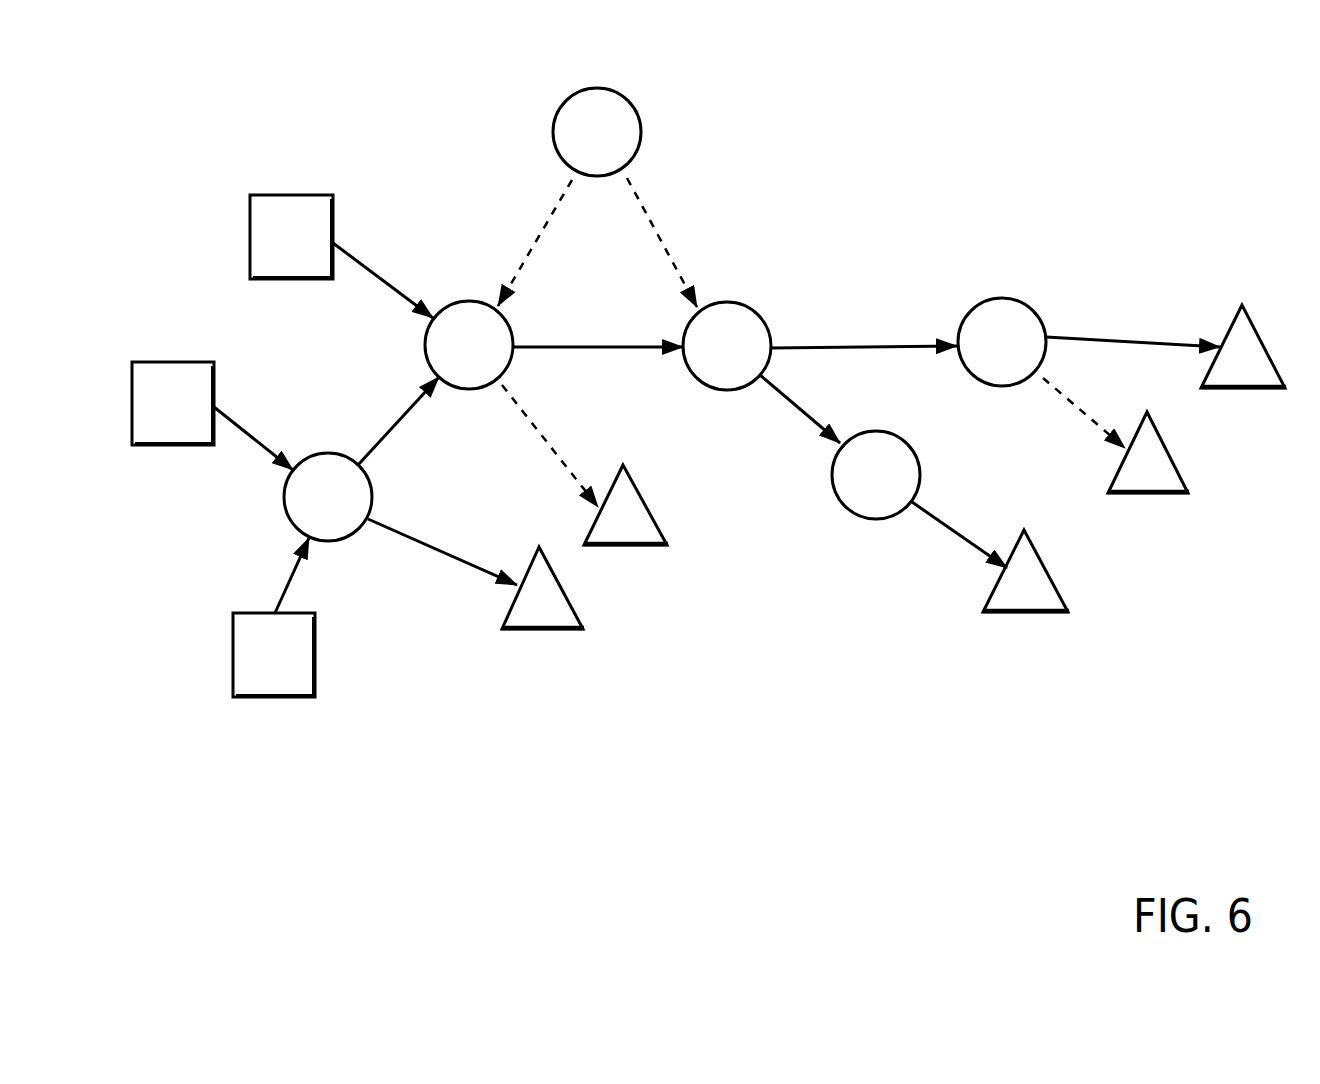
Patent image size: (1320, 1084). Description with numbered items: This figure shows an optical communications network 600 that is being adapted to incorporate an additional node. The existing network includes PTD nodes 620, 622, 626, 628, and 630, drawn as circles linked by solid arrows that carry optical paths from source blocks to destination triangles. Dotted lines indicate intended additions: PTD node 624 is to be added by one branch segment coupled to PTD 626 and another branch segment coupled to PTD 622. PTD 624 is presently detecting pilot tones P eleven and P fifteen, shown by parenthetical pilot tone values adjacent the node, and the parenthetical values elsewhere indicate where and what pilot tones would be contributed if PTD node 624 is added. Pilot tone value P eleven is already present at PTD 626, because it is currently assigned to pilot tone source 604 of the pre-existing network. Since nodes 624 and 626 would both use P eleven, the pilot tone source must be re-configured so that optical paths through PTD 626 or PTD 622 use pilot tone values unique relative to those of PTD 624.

The optical communications network 600 is at (868, 154).
The pilot tone source 604 is at (187, 362).
The PTD node 620 is at (328, 497).
The PTD node 622 is at (469, 345).
The PTD node 624 is at (597, 132).
The PTD node 626 is at (727, 346).
The PTD node 628 is at (876, 475).
The PTD node 630 is at (1002, 342).